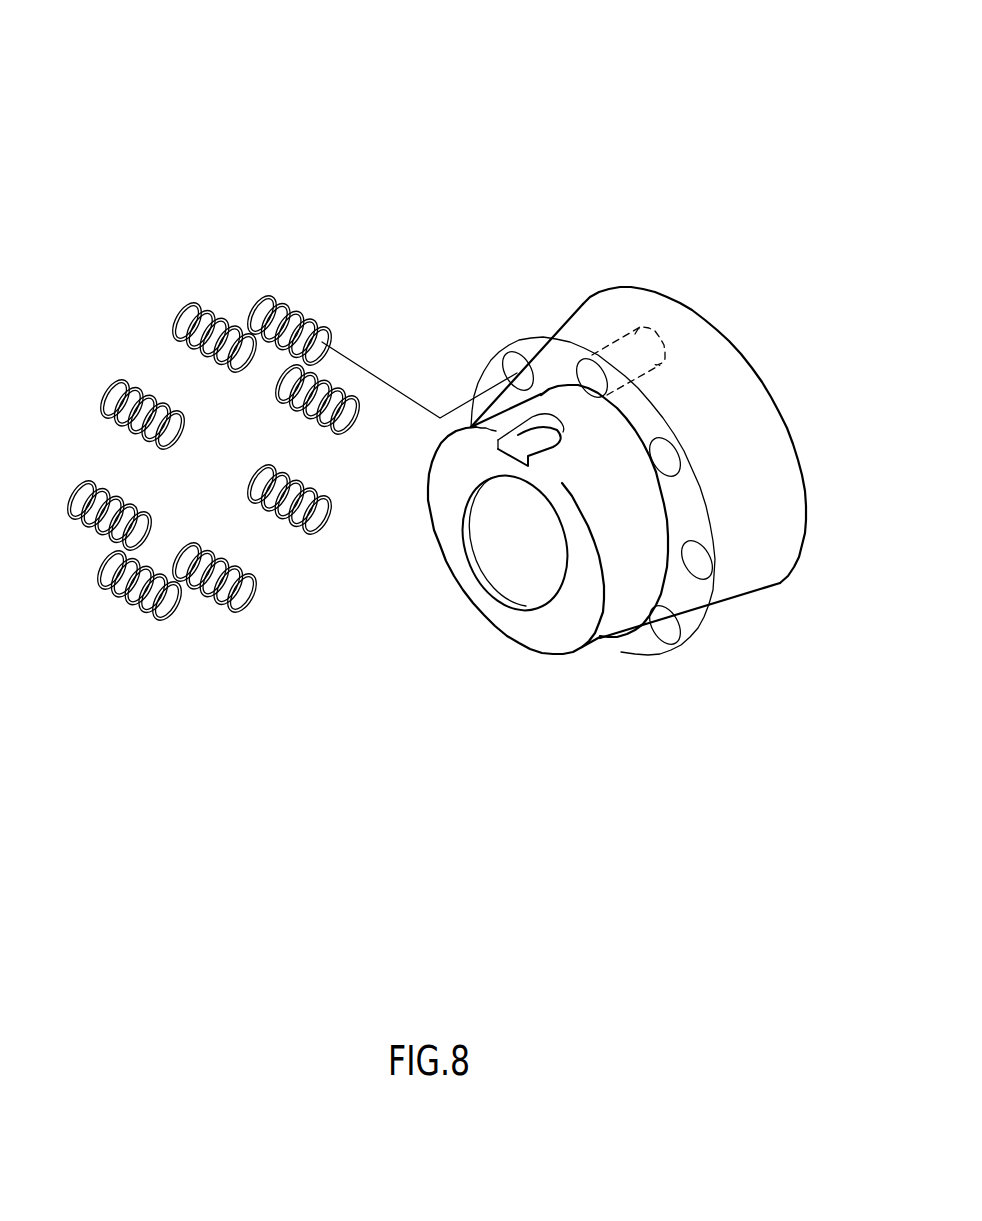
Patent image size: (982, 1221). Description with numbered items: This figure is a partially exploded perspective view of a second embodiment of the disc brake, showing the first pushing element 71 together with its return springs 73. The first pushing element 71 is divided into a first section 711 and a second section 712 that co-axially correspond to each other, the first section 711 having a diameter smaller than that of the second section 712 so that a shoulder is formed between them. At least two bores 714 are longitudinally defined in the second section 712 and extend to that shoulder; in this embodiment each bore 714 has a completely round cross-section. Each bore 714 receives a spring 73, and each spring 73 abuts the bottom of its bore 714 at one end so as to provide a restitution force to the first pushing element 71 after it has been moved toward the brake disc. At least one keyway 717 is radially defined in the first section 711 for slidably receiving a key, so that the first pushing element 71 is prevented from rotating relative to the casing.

The first pushing element 71 is at (559, 413).
The spring 73 is at (293, 312).
The first section 711 is at (628, 581).
The second section 712 is at (757, 567).
The bore 714 is at (615, 346).
The keyway 717 is at (496, 442).